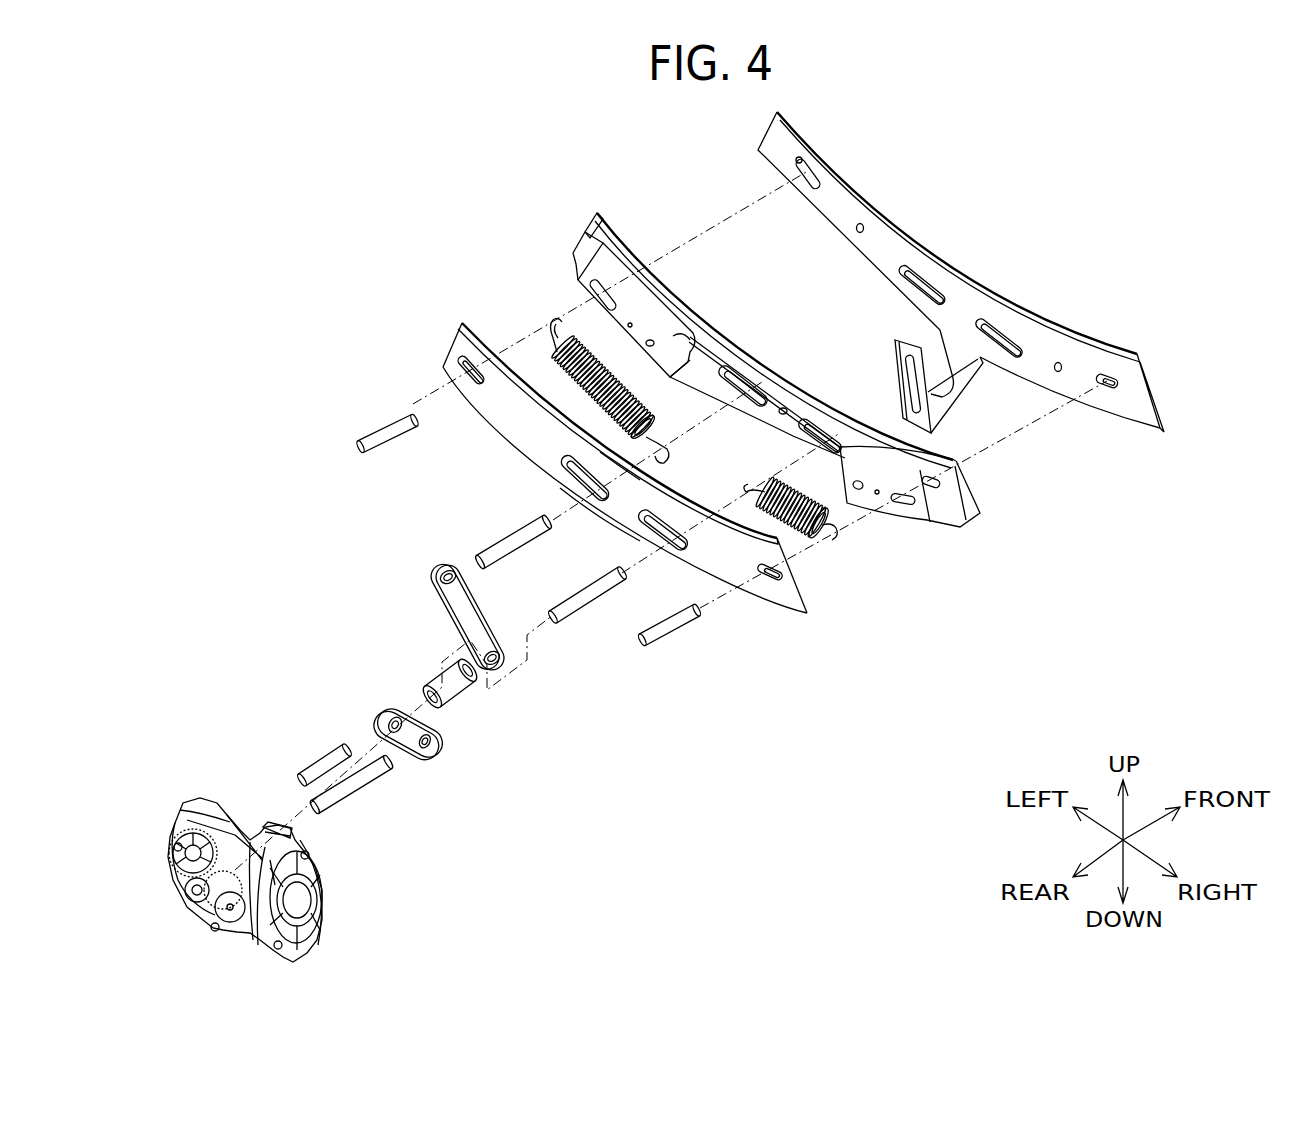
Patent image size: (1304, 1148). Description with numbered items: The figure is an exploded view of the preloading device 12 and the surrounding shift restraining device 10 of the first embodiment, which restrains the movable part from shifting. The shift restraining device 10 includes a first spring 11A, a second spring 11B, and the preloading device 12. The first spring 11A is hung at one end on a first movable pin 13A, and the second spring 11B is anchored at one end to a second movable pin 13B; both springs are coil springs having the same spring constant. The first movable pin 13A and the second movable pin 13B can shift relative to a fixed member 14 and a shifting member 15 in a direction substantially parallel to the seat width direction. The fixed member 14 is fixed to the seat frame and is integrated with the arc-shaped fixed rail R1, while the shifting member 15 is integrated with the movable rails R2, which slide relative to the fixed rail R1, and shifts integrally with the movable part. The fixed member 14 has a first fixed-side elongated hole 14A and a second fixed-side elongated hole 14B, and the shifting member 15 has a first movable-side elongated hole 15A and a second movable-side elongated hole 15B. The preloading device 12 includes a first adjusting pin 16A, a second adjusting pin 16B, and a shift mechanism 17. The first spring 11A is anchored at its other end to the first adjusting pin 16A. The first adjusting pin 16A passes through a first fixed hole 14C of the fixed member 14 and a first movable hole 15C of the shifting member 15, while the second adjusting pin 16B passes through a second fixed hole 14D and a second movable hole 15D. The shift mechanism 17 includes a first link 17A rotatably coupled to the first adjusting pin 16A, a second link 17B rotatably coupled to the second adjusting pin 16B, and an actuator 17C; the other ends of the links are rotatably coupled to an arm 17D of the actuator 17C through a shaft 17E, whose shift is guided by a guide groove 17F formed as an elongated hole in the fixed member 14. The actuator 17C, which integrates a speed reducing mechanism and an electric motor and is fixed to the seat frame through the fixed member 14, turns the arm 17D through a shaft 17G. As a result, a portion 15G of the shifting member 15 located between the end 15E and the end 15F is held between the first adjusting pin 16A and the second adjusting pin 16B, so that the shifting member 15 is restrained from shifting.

The shift restraining device 10 is at (396, 228).
The first spring 11A is at (550, 318).
The second spring 11B is at (843, 538).
The preloading device 12 is at (578, 713).
The first movable pin 13A is at (370, 432).
The second movable pin 13B is at (684, 637).
The fixed member 14 is at (901, 229).
The first fixed-side elongated hole 14A is at (800, 162).
The second fixed-side elongated hole 14B is at (1105, 392).
The first fixed hole 14C is at (745, 399).
The second fixed hole 14D is at (805, 433).
The shifting member 15 is at (482, 320).
The first movable-side elongated hole 15A is at (458, 364).
The second movable-side elongated hole 15B is at (762, 580).
The first movable hole 15C is at (560, 478).
The second movable hole 15D is at (677, 550).
The end 15E is at (597, 495).
The end 15F is at (637, 522).
The portion of the shifting member 15G is at (623, 510).
The first adjusting pin 16A is at (490, 550).
The second adjusting pin 16B is at (575, 602).
The shift mechanism 17 is at (368, 597).
The first link 17A is at (538, 597).
The second link 17B is at (462, 700).
The actuator 17C is at (222, 800).
The arm 17D is at (400, 716).
The shaft 17E is at (316, 748).
The guide groove 17F is at (905, 383).
The shaft 17G is at (365, 795).
The fixed rail R1 is at (752, 357).
The movable rails R2 is at (622, 264).